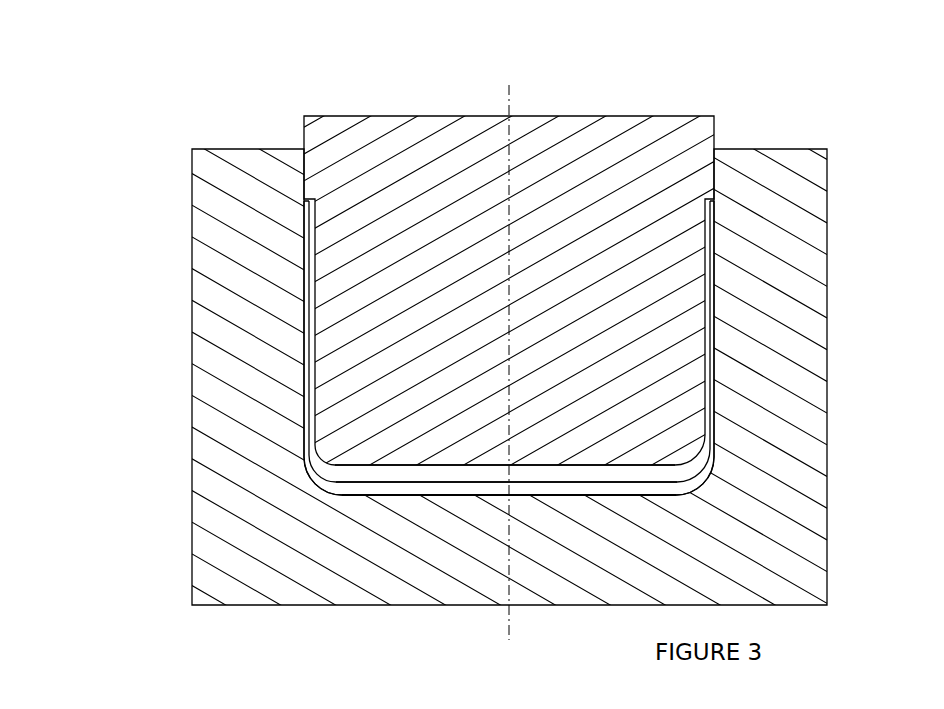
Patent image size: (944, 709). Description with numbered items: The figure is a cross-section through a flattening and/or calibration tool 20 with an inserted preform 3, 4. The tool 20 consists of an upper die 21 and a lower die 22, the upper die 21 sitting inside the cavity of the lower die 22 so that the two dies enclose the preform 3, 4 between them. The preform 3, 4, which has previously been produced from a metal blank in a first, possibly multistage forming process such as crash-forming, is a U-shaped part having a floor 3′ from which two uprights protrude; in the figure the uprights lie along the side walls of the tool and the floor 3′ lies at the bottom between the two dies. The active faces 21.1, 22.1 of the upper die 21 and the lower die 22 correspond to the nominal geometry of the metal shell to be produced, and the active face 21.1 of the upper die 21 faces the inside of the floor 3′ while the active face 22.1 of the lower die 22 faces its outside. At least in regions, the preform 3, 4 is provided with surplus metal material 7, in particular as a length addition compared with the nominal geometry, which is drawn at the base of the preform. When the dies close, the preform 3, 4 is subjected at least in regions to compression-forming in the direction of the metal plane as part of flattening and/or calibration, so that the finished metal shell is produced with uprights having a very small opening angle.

The flattening and/or calibration tool 20 is at (309, 78).
The upper die 21 is at (348, 142).
The active face of the upper die 21.1 is at (671, 468).
The lower die 22 is at (227, 213).
The active face of the lower die 22.1 is at (500, 492).
The preform 3 is at (304, 328).
The preform 4 is at (382, 300).
The floor 3′ is at (370, 474).
The surplus metal material 7 is at (496, 493).